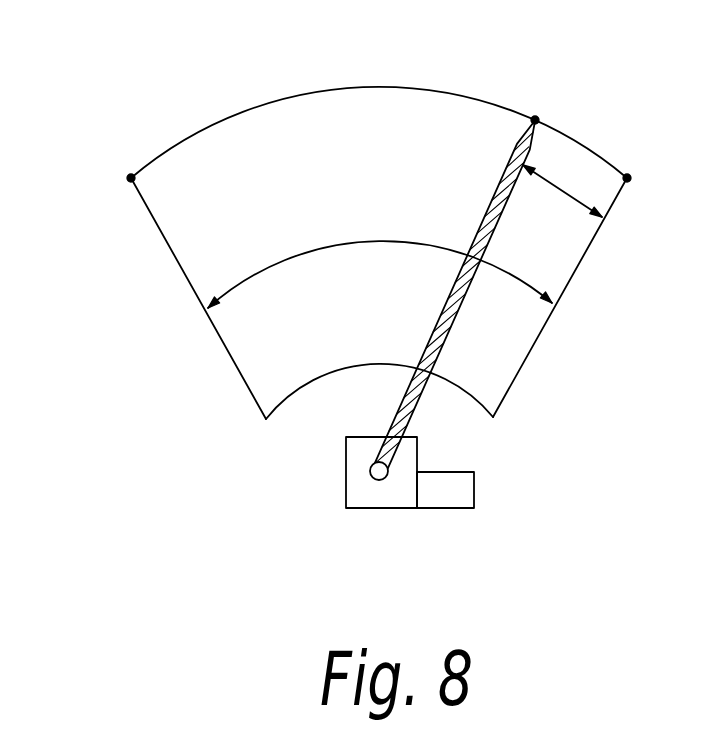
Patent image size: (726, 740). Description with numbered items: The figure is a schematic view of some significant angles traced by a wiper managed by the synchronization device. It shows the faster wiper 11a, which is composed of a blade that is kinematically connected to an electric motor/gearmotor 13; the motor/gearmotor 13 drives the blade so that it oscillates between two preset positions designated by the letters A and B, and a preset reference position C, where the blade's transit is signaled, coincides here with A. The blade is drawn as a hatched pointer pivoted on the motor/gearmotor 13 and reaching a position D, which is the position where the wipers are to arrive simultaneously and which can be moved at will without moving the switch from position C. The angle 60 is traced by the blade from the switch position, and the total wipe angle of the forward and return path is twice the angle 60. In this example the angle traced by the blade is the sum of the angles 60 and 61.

The faster wiper 11a is at (325, 88).
The electric motor/gearmotor 13 is at (443, 503).
The angle 60 is at (502, 270).
The angle 61 is at (567, 192).